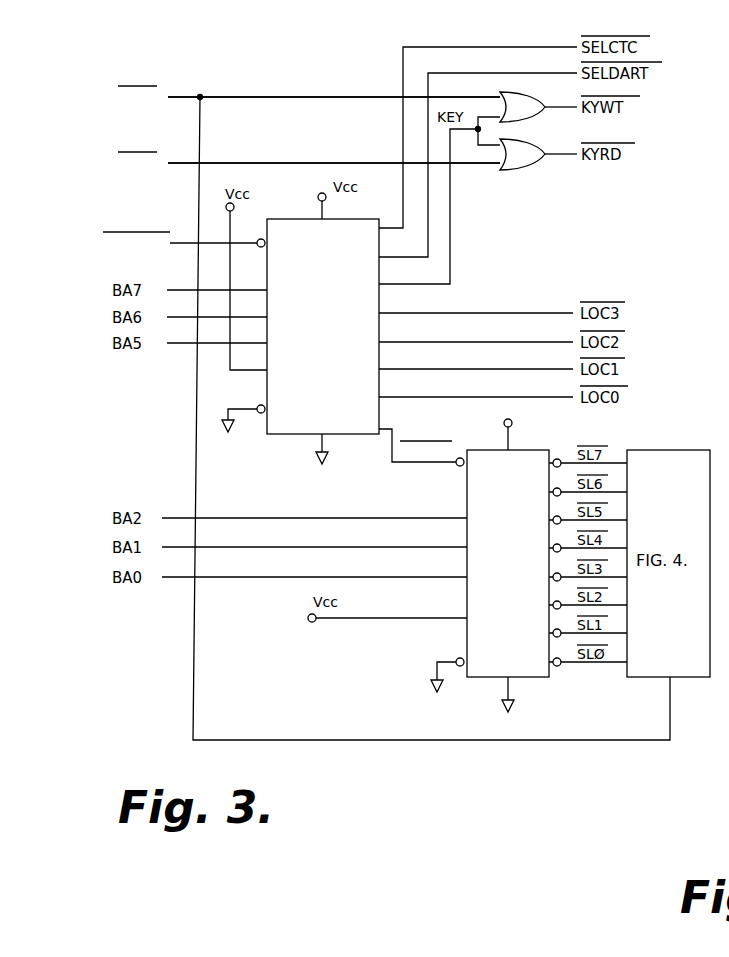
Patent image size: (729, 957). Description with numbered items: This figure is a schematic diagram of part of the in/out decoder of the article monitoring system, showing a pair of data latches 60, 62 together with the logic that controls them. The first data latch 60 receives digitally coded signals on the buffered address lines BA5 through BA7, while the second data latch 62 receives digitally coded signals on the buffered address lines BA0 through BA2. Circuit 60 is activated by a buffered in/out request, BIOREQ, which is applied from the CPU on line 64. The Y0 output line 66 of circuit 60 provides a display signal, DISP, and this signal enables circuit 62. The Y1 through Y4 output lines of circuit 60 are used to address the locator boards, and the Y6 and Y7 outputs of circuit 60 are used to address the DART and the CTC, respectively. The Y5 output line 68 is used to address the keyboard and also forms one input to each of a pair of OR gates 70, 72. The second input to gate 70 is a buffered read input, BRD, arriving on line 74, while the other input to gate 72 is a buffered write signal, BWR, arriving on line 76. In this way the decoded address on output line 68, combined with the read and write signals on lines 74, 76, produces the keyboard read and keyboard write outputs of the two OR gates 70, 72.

The data latch 60 is at (293, 428).
The data latch 62 is at (532, 668).
The line 64 is at (185, 243).
The Y0 output line 66 is at (397, 468).
The Y5 output line 68 is at (451, 244).
The OR gate 70 is at (525, 160).
The OR gate 72 is at (531, 110).
The line 74 is at (287, 163).
The line 76 is at (321, 97).